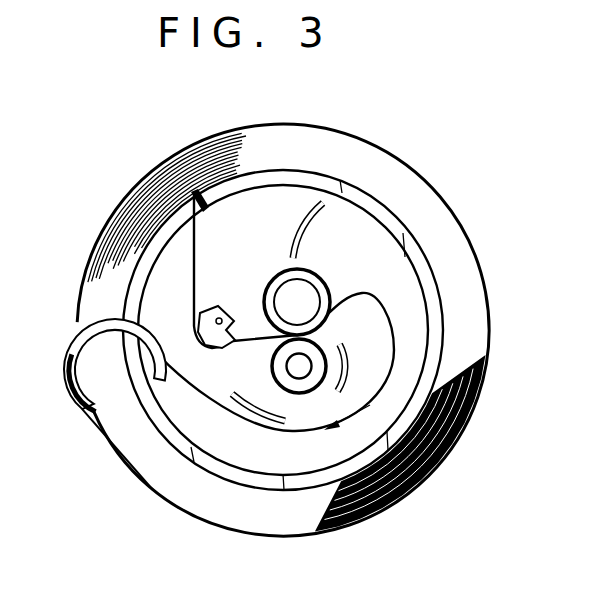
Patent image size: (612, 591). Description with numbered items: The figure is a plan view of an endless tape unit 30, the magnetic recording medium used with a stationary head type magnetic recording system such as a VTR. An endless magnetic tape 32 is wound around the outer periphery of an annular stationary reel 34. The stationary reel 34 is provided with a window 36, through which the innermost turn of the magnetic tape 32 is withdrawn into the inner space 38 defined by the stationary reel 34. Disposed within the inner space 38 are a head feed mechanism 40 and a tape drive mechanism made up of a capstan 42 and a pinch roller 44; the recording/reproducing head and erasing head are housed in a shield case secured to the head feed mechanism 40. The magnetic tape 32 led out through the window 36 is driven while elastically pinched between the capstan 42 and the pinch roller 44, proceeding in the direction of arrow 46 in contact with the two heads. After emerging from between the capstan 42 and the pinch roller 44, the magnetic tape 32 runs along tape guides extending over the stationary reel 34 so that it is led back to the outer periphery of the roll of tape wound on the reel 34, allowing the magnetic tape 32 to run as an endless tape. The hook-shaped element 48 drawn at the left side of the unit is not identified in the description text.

The endless tape unit 30 is at (485, 388).
The endless magnetic tape 32 is at (466, 281).
The annular stationary reel 34 is at (394, 232).
The window 36 is at (188, 196).
The inner space 38 is at (237, 222).
The head feed mechanism 40 is at (210, 311).
The capstan 42 is at (276, 280).
The pinch roller 44 is at (272, 366).
The arrow 46 is at (360, 414).
The hook 48 is at (66, 386).